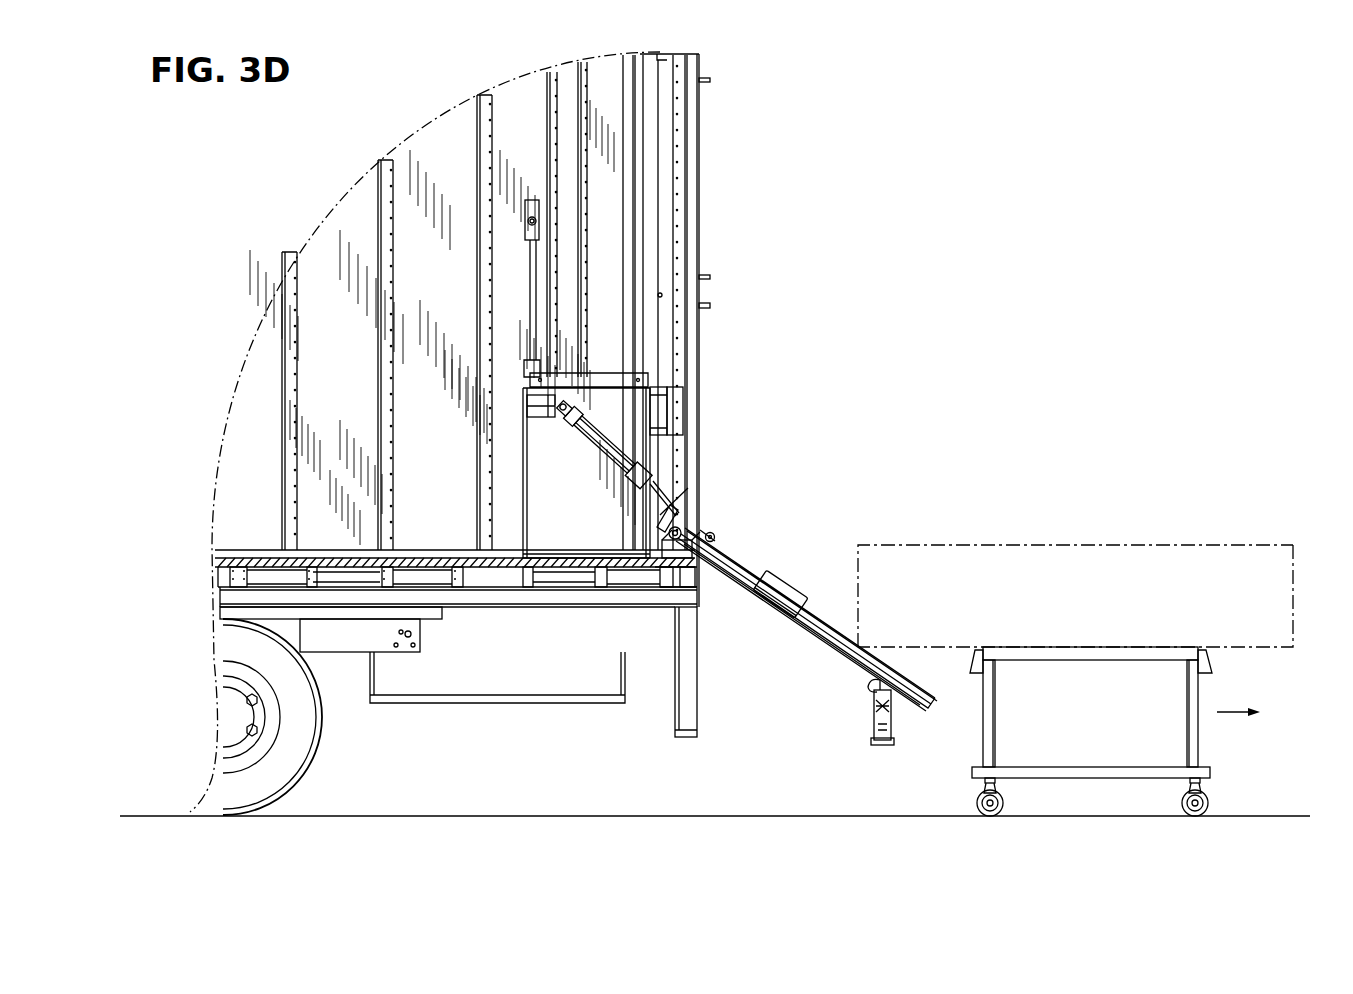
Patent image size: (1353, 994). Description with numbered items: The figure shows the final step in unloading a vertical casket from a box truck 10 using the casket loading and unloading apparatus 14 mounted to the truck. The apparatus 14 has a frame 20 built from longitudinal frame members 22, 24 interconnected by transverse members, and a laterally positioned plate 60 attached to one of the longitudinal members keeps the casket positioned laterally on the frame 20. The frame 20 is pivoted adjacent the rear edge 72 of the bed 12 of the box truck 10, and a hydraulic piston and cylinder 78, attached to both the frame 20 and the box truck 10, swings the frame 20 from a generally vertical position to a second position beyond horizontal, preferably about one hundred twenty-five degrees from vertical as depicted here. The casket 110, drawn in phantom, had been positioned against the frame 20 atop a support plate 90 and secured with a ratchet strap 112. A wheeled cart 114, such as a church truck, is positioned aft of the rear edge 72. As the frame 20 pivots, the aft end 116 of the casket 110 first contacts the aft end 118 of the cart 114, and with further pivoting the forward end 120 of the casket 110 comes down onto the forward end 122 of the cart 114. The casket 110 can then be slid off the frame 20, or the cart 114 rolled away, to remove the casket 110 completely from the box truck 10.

The box truck 10 is at (697, 128).
The bed 12 is at (418, 556).
The casket loading and/or unloading apparatus 14 is at (806, 589).
The frame 20 is at (806, 619).
The longitudinal frame member 22 is at (738, 576).
The longitudinal frame member 24 is at (806, 638).
The laterally positioned plate 60 is at (784, 588).
The rear edge 72 is at (700, 577).
The hydraulic piston and cylinder 78 is at (627, 450).
The support plate 90 is at (662, 508).
The casket 110 is at (1086, 573).
The ratchet strap 112 is at (878, 717).
The wheeled cart 114 is at (1095, 731).
The aft end of casket 116 is at (1295, 587).
The aft end of cart 118 is at (1200, 690).
The forward end of casket 120 is at (858, 570).
The forward end of cart 122 is at (981, 723).